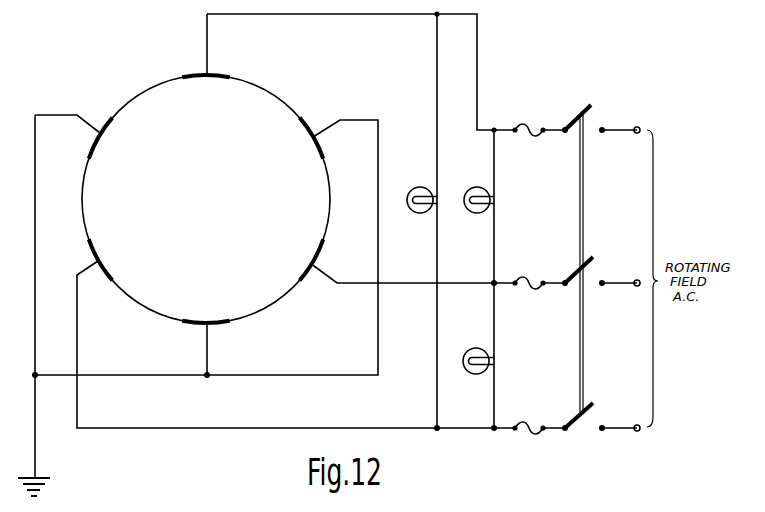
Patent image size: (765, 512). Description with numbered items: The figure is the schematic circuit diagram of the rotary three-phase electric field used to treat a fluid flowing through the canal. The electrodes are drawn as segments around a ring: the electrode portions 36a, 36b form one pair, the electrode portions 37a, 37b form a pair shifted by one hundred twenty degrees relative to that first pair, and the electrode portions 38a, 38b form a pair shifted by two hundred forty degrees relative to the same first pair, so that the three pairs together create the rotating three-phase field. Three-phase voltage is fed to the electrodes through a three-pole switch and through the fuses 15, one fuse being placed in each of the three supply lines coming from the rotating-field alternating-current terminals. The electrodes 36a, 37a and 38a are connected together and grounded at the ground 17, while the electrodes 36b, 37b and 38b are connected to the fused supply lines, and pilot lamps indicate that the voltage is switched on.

The electrode portion 36a is at (200, 318).
The electrode portion 36b is at (191, 79).
The electrode portion 37a is at (103, 136).
The electrode portion 37b is at (309, 264).
The electrode portion 38a is at (317, 153).
The electrode portion 38b is at (99, 262).
The fuse 15 is at (519, 126).
The ground 17 is at (48, 490).